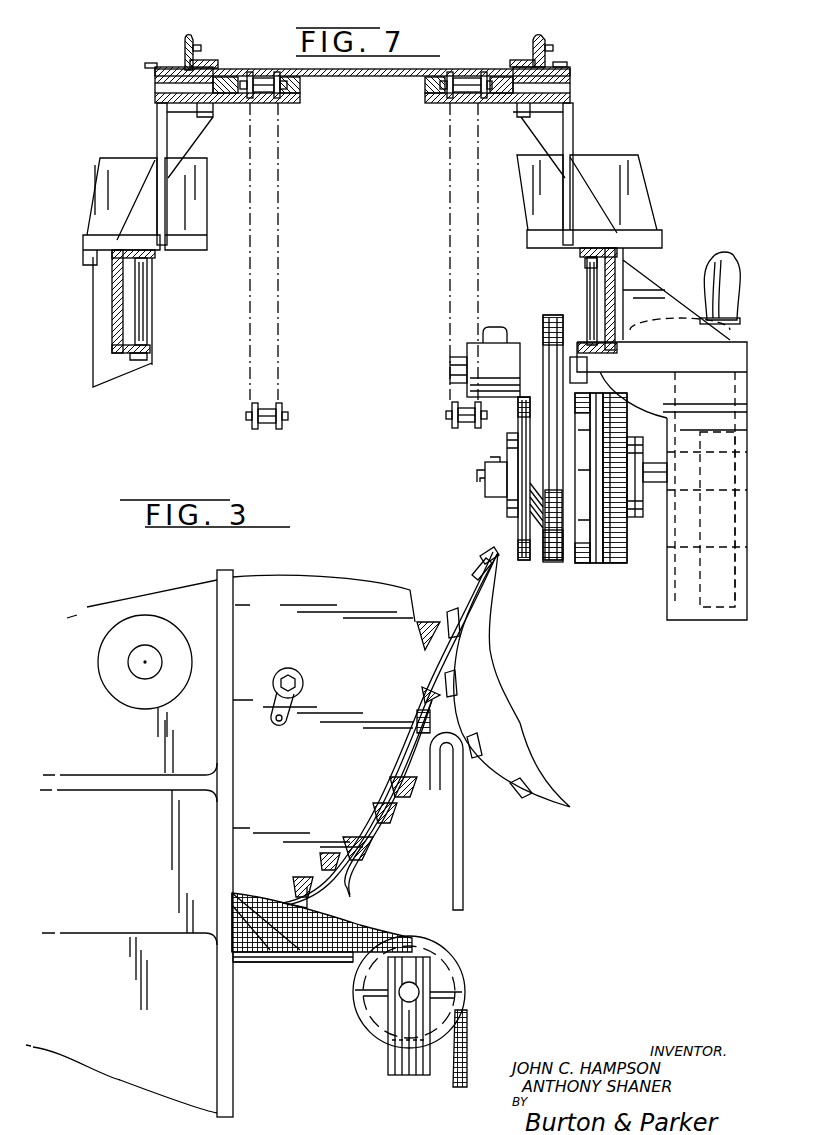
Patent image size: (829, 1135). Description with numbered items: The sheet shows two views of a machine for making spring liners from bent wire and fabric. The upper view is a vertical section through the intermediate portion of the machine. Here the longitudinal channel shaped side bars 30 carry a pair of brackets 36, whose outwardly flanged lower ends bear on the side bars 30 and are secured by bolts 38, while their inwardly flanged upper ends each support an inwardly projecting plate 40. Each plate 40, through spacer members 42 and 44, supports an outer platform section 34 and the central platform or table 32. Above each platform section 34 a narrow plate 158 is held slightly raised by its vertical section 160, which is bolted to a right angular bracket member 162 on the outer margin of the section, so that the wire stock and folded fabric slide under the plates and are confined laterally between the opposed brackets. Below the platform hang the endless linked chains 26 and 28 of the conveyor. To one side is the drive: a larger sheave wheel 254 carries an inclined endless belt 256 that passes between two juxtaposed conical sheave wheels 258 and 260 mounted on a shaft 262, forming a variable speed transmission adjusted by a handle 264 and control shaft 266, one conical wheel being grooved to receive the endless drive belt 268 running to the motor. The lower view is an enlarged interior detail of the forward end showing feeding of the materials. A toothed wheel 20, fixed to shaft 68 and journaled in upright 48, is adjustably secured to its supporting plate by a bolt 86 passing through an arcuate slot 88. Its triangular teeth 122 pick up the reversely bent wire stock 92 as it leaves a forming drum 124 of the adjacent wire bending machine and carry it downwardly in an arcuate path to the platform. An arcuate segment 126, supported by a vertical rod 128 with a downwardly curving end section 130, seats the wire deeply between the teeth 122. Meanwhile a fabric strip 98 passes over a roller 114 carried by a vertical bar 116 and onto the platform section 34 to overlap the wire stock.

In FIG. 3, the toothed wheel 20 is at (367, 597).
In FIG. 7, the endless linked chain 26 is at (462, 422).
In FIG. 7, the endless linked chain 28 is at (286, 412).
In FIG. 7, the side bar 30 is at (113, 295).
In FIG. 7, the central platform section 32 is at (372, 76).
In FIG. 7, the outer platform section 34 is at (180, 82).
In FIG. 3, the outer platform section 34 is at (320, 954).
In FIG. 7, the bracket 36 is at (160, 131).
In FIG. 7, the bolt 38 is at (141, 300).
In FIG. 7, the plate 40 is at (268, 101).
In FIG. 7, the spacer member 42 is at (238, 101).
In FIG. 7, the spacer member 44 is at (301, 87).
In FIG. 3, the upright 48 is at (106, 614).
In FIG. 3, the shaft 68 is at (143, 663).
In FIG. 3, the bolt 86 is at (293, 683).
In FIG. 3, the arcuate slot 88 is at (283, 727).
In FIG. 3, the wire stock 92 is at (465, 592).
In FIG. 3, the fabric strip 98 is at (467, 1049).
In FIG. 3, the roller 114 is at (461, 989).
In FIG. 3, the vertical bar 116 is at (407, 1052).
In FIG. 3, the tooth 122 is at (397, 826).
In FIG. 3, the forming drum 124 is at (523, 758).
In FIG. 3, the arcuate segment 126 is at (397, 779).
In FIG. 3, the vertical rod 128 is at (458, 853).
In FIG. 3, the downwardly curving end section 130 is at (370, 857).
In FIG. 7, the plate 158 is at (206, 64).
In FIG. 7, the vertical section 160 is at (192, 54).
In FIG. 7, the bracket member 162 is at (166, 68).
In FIG. 7, the sheave wheel 254 is at (543, 327).
In FIG. 7, the endless belt 256 is at (558, 507).
In FIG. 7, the conical sheave wheel 258 is at (527, 528).
In FIG. 7, the conical sheave wheel 260 is at (592, 555).
In FIG. 7, the shaft 262 is at (660, 490).
In FIG. 7, the handle 264 is at (723, 265).
In FIG. 7, the control shaft 266 is at (745, 407).
In FIG. 7, the endless drive belt 268 is at (605, 557).